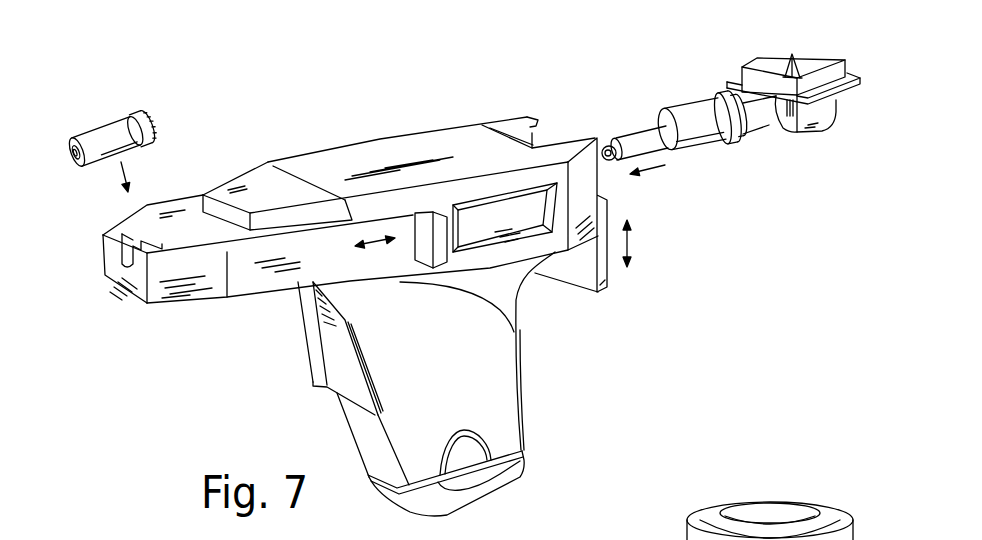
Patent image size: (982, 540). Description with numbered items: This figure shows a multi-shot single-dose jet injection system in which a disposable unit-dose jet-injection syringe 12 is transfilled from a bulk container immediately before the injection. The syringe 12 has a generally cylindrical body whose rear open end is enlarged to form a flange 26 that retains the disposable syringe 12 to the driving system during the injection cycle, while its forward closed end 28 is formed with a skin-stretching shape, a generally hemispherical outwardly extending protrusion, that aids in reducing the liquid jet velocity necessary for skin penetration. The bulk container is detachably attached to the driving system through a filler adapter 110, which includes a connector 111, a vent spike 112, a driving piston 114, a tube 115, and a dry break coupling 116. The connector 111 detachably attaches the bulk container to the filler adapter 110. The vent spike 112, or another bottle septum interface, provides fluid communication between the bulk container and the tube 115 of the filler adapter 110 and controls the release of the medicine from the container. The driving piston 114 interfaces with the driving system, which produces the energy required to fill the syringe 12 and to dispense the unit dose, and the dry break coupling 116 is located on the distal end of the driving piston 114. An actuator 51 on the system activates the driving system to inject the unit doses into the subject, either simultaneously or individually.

The disposable syringe 12 is at (96, 136).
The flange 26 is at (160, 127).
The forward closed end 28 is at (74, 156).
The actuator 51 is at (313, 373).
The filler adapter 110 is at (768, 142).
The connector 111 is at (840, 66).
The vent spike 112 is at (794, 54).
The driving piston 114 is at (711, 140).
The tube 115 is at (764, 118).
The dry break coupling 116 is at (606, 143).